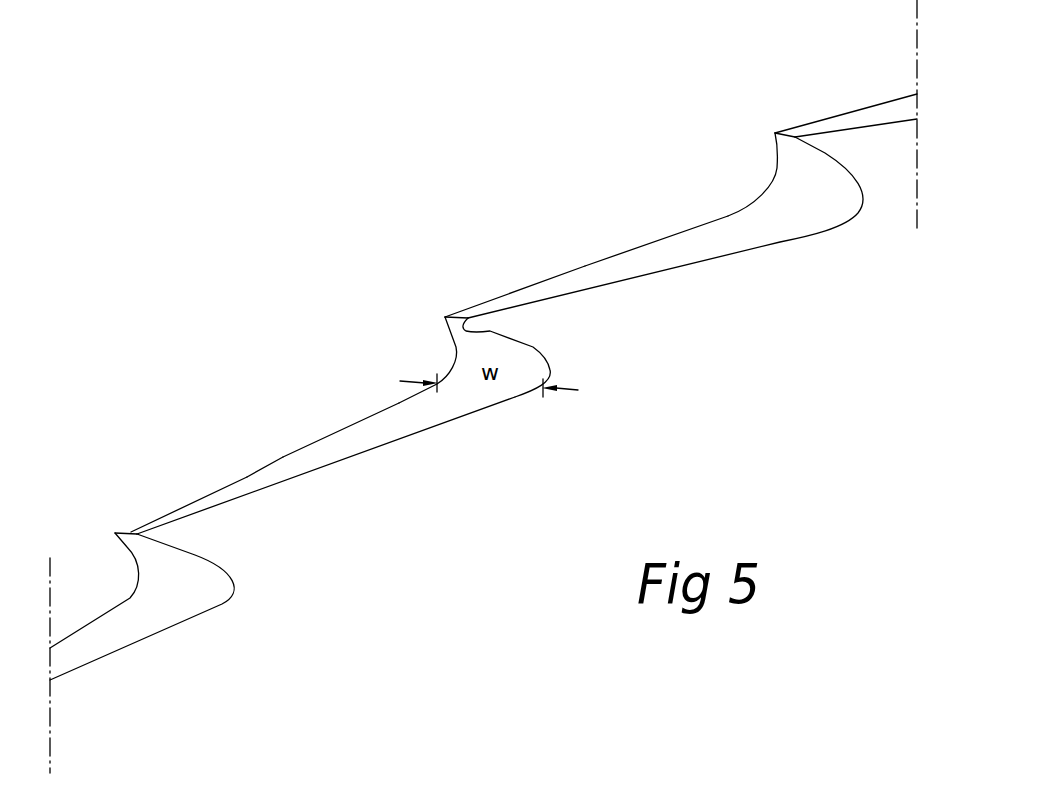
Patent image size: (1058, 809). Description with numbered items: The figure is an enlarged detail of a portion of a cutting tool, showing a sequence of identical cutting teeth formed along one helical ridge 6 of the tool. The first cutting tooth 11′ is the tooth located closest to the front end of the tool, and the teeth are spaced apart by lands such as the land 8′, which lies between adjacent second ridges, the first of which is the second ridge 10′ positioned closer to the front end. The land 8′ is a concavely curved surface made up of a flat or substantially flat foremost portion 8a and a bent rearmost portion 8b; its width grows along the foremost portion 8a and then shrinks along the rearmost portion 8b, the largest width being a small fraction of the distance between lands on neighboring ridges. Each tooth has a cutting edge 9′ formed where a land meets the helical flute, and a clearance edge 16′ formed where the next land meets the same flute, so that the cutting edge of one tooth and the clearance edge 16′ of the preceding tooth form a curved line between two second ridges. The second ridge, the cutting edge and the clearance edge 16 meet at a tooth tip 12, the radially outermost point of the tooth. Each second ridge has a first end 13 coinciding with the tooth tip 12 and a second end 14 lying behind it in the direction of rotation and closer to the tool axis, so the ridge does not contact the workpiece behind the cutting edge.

The helical ridge 6 is at (633, 260).
The first associated land 8′ is at (399, 420).
The foremost portion 8a is at (247, 480).
The rearmost portion 8b is at (475, 341).
The cutting edge 9′ is at (128, 546).
The second ridge 10′ is at (129, 528).
The first cutting tooth 11′ is at (118, 484).
The tooth tip 12 is at (428, 214).
The first end 13 is at (445, 317).
The second end 14 is at (468, 316).
The clearance edge 16 is at (585, 264).
The clearance edge 16′ is at (283, 456).